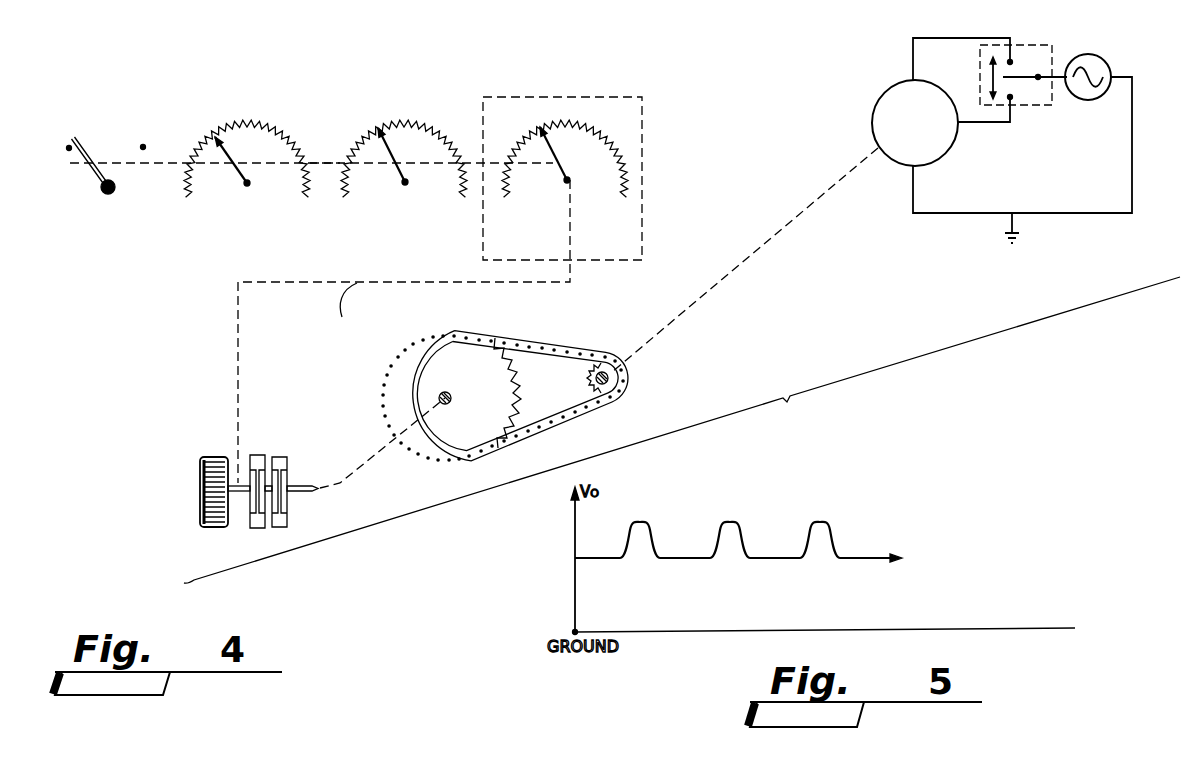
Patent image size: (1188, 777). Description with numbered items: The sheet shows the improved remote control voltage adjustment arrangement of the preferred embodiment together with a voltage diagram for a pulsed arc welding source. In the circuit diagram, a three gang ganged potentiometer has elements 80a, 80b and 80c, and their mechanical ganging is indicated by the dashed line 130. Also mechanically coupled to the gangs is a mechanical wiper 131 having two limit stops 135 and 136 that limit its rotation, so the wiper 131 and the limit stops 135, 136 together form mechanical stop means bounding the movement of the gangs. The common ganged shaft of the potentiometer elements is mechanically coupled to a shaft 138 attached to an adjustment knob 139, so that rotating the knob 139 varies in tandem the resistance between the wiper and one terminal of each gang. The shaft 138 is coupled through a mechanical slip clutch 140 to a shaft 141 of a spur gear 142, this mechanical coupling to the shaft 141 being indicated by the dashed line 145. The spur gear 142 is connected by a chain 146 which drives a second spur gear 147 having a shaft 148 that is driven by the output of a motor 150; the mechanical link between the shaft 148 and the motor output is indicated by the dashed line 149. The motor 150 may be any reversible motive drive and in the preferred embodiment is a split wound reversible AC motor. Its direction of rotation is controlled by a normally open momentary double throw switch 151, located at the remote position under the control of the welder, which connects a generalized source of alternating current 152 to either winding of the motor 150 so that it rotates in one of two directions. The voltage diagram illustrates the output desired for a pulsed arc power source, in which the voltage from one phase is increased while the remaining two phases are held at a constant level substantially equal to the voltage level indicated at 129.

In FIG. 4, the ganged potentiometer element 80a is at (410, 118).
In FIG. 4, the ganged potentiometer element 80b is at (613, 93).
In FIG. 4, the ganged potentiometer element 80c is at (270, 125).
In FIG. 5, the voltage level 129 is at (575, 563).
In FIG. 4, the dashed line 130 is at (327, 165).
In FIG. 4, the mechanical wiper 131 is at (87, 153).
In FIG. 4, the limit stop 135 is at (69, 148).
In FIG. 4, the limit stop 136 is at (143, 147).
In FIG. 4, the shaft 138 is at (238, 492).
In FIG. 4, the adjustment knob 139 is at (200, 472).
In FIG. 4, the mechanical slip clutch 140 is at (272, 443).
In FIG. 4, the shaft 141 is at (448, 395).
In FIG. 4, the spur gear 142 is at (460, 328).
In FIG. 4, the dashed line 145 is at (368, 463).
In FIG. 4, the chain 146 is at (550, 343).
In FIG. 4, the second spur gear 147 is at (607, 347).
In FIG. 4, the shaft 148 is at (605, 382).
In FIG. 4, the dashed line 149 is at (780, 230).
In FIG. 4, the motor 150 is at (878, 102).
In FIG. 4, the switch 151 is at (1043, 105).
In FIG. 4, the source of alternating current 152 is at (1087, 102).